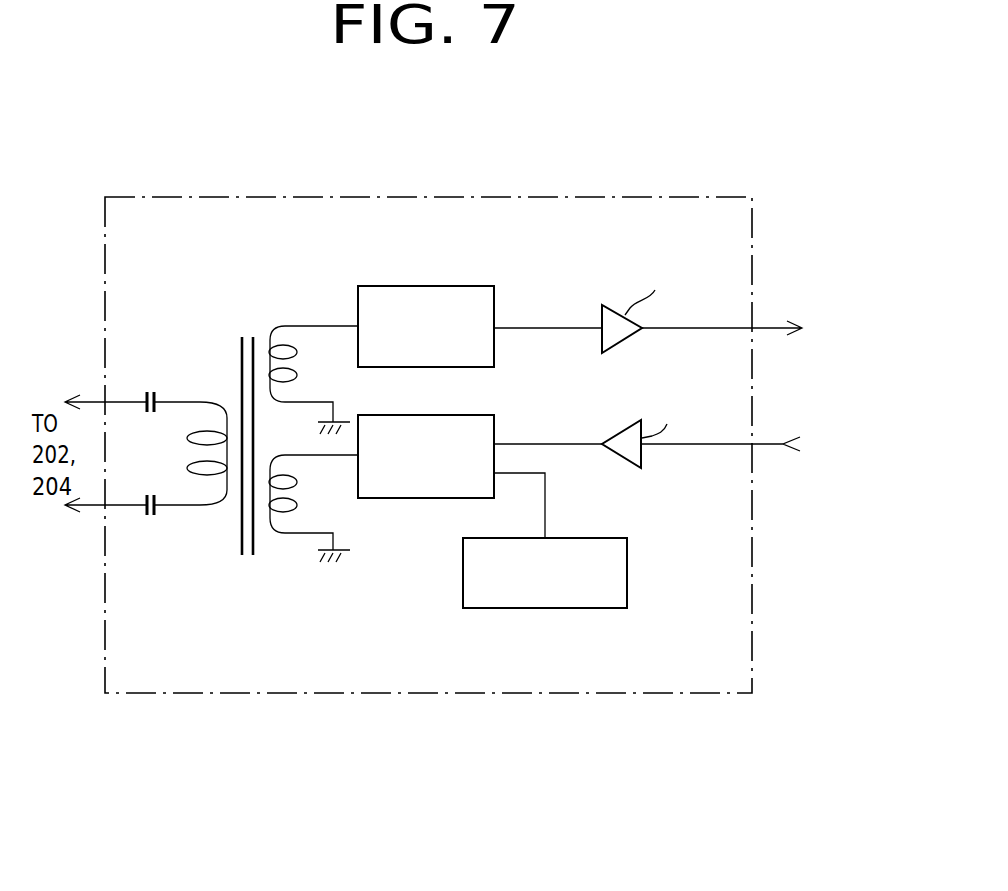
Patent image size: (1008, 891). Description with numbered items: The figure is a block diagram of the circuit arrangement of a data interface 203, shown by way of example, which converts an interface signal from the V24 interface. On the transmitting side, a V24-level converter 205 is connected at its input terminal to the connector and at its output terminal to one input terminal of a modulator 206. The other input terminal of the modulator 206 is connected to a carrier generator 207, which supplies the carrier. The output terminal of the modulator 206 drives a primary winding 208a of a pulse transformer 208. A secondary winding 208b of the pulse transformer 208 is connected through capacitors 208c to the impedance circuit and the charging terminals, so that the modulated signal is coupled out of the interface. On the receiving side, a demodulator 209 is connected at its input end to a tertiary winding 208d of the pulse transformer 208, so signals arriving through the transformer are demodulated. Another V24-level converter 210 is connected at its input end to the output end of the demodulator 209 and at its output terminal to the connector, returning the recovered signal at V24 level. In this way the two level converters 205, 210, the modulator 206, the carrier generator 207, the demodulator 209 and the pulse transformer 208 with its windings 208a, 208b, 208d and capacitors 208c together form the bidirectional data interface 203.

The data interface 203 is at (536, 197).
The V24-level converter 205 is at (621, 427).
The modulator 206 is at (400, 499).
The carrier generator 207 is at (627, 560).
The pulse transformer 208 is at (205, 694).
The primary winding 208a is at (293, 535).
The secondary winding 208b is at (187, 507).
The capacitors 208c is at (185, 400).
The tertiary winding 208d is at (292, 326).
The demodulator 209 is at (430, 286).
The V24-level converter 210 is at (601, 315).